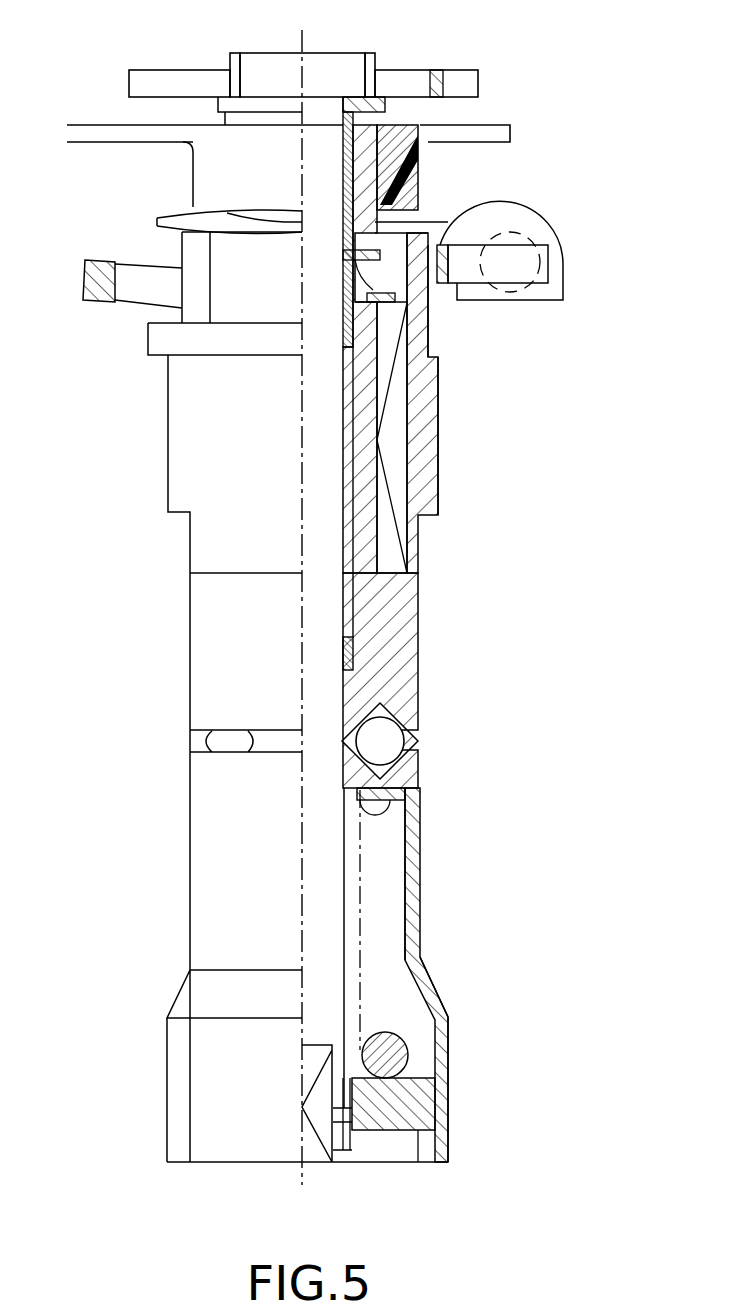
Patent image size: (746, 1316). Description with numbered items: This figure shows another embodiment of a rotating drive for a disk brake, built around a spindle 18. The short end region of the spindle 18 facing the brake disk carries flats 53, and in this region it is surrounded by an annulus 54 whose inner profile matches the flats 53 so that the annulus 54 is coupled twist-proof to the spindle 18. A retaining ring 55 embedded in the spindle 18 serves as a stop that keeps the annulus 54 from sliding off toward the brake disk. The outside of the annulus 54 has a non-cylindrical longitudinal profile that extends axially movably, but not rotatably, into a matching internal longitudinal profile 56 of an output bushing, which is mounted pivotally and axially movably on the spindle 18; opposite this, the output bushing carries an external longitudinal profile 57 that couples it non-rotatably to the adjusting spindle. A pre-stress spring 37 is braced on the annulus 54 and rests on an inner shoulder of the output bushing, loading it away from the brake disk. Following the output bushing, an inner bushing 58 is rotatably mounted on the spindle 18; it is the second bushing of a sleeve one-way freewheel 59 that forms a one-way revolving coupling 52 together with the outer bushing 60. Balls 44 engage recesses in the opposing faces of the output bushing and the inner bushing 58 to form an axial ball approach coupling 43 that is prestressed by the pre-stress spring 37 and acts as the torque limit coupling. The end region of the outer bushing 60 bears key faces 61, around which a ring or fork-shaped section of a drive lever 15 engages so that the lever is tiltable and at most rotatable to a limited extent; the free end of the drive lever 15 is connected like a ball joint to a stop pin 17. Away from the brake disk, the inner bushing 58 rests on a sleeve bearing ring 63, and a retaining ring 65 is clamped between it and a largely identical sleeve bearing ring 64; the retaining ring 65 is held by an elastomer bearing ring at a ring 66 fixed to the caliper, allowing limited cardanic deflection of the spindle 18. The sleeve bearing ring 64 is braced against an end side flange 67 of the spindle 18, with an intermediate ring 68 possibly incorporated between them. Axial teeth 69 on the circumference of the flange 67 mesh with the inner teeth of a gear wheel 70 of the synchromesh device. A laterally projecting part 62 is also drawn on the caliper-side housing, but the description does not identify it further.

The gear wheel 70 is at (200, 75).
The axial teeth 69 is at (233, 55).
The end side flange 67 is at (338, 58).
The intermediate ring 68 is at (375, 100).
The sleeve bearing ring 64 is at (372, 115).
The retaining ring 65 is at (362, 180).
The ring 66 is at (67, 126).
The sleeve bearing ring 63 is at (440, 245).
The drive lever 15 is at (460, 262).
The stop pin 17 is at (553, 290).
The boss 62 is at (88, 300).
The key faces 61 is at (428, 330).
The outer bushing 60 is at (428, 382).
The one-way revolving coupling 52 is at (452, 407).
The sleeve one-way freewheel 59 is at (395, 443).
The inner bushing 58 is at (395, 605).
The axial ball approach coupling 43 is at (442, 722).
The balls 44 is at (392, 738).
The pre-stress spring 37 is at (412, 835).
The spindle 18 is at (333, 910).
The internal non-cylindrical longitudinal profile 56 is at (432, 1033).
The external non-cylindrical longitudinal profile 57 is at (448, 1097).
The annulus 54 is at (415, 1110).
The retaining ring 55 is at (345, 1115).
The flats 53 is at (318, 1150).